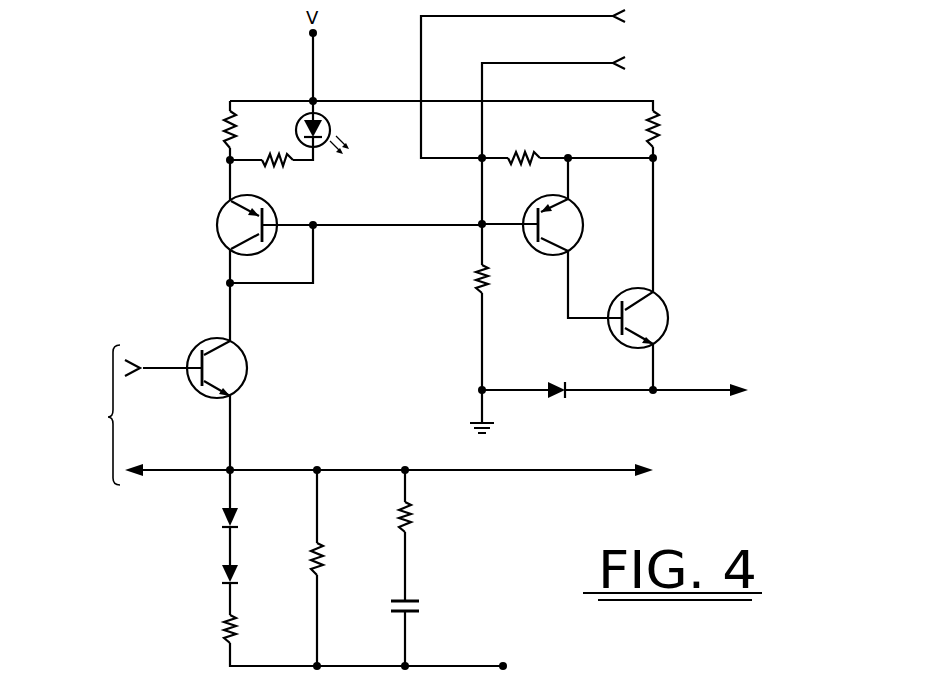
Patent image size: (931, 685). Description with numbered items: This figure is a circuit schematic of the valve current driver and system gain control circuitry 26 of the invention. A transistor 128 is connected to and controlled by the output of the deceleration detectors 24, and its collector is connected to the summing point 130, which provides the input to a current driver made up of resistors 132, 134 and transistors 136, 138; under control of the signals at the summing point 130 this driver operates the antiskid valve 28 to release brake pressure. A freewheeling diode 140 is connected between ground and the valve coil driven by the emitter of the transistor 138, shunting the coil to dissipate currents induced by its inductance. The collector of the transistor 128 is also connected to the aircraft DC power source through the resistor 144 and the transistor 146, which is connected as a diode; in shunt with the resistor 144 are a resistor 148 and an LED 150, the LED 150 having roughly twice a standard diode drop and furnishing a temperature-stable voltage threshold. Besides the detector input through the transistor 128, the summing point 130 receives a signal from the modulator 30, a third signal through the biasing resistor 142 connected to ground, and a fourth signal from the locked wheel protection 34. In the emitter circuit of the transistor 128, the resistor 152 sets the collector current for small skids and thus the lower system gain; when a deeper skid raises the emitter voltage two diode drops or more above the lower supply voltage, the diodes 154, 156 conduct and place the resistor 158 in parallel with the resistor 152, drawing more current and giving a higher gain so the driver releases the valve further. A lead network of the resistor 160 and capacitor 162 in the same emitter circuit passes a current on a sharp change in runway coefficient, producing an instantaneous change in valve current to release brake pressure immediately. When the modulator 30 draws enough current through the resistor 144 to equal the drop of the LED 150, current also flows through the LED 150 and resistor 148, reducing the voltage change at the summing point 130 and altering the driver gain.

The deceleration detectors 24 is at (61, 415).
The valve current driver and system gain control circuitry 26 is at (714, 174).
The antiskid valve 28 is at (765, 392).
The modulator 30 is at (487, 245).
The locked wheel protection 34 is at (658, 104).
The transistor 128 is at (247, 368).
The summing point 130 is at (476, 216).
The resistor 132 is at (674, 134).
The resistor 134 is at (525, 142).
The transistor 136 is at (583, 225).
The transistor 138 is at (668, 318).
The freewheeling diode 140 is at (567, 377).
The biasing resistor 142 is at (499, 349).
The resistor 144 is at (204, 156).
The transistor 146 is at (217, 224).
The resistor 148 is at (271, 170).
The LED 150 is at (334, 127).
The resistor 152 is at (339, 570).
The diode 154 is at (253, 517).
The diode 156 is at (253, 590).
The resistor 158 is at (379, 647).
The resistor 160 is at (426, 535).
The capacitor 162 is at (424, 633).